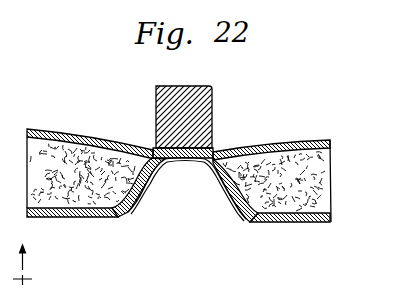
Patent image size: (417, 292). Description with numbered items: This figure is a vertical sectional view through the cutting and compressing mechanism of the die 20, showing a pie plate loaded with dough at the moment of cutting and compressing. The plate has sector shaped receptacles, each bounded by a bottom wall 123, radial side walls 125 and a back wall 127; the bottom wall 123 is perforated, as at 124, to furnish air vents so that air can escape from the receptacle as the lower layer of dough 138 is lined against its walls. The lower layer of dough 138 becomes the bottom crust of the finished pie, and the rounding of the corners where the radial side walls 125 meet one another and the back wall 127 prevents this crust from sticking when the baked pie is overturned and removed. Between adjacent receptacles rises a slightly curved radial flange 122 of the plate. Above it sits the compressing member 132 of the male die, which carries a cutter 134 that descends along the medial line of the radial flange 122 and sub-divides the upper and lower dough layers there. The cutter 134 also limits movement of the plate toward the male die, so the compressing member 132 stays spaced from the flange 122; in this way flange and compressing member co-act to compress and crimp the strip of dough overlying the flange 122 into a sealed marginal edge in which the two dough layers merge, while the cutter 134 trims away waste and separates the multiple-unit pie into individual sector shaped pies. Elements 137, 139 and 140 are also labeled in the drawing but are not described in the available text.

The die 20 is at (35, 265).
The radial flange 122 is at (190, 162).
The bottom wall 123 is at (92, 221).
The perforation 124 is at (67, 172).
The radial side wall 125 is at (122, 220).
The back wall 127 is at (142, 196).
The compressing member 132 is at (212, 97).
The cutter 134 is at (212, 129).
The top cover layer of right pad 137 is at (258, 148).
The lower layer of dough 138 is at (273, 221).
The right end edge 139 is at (328, 146).
The top cover layer of left pad 140 is at (125, 151).